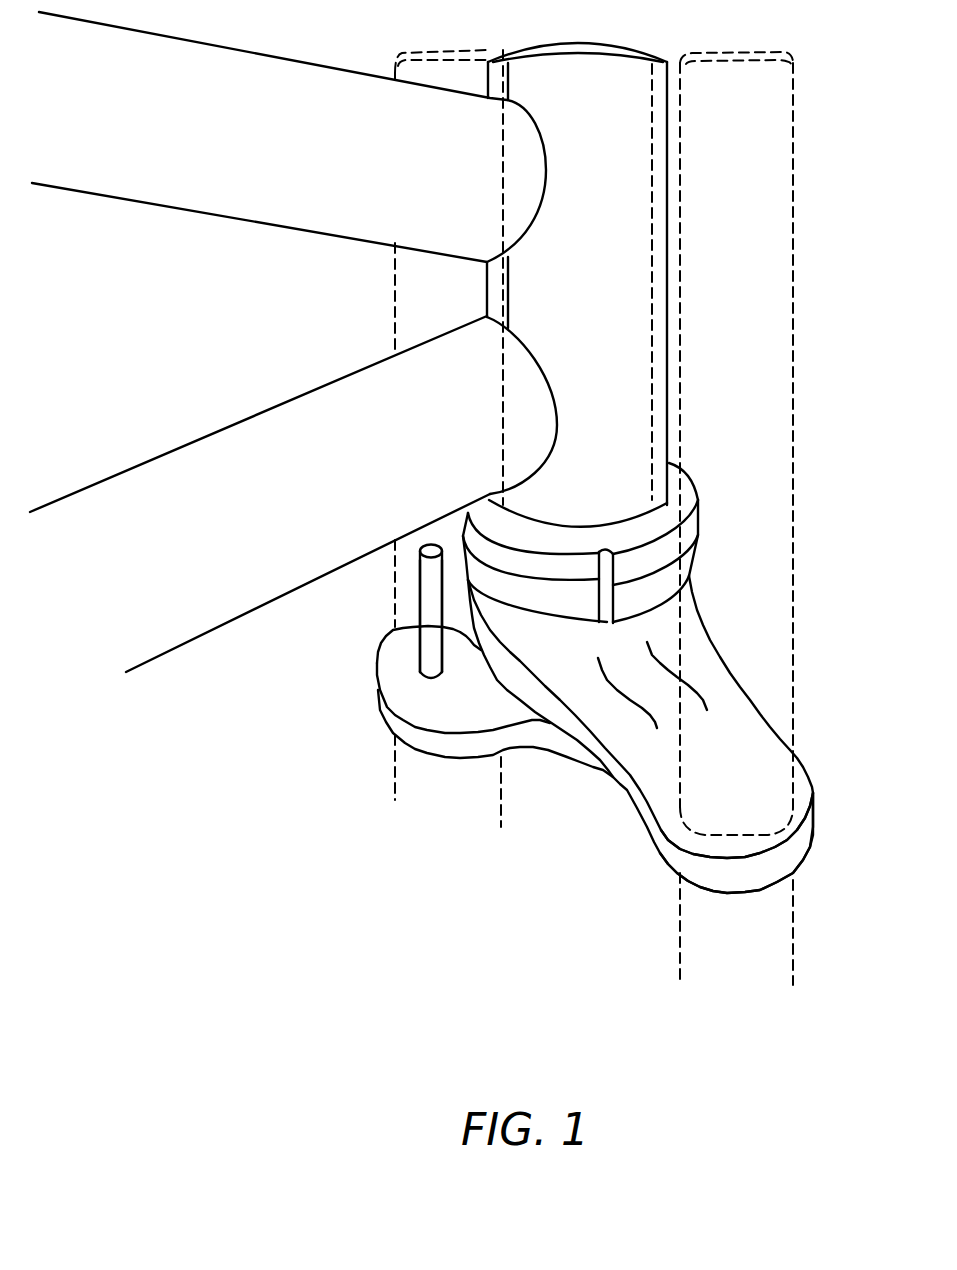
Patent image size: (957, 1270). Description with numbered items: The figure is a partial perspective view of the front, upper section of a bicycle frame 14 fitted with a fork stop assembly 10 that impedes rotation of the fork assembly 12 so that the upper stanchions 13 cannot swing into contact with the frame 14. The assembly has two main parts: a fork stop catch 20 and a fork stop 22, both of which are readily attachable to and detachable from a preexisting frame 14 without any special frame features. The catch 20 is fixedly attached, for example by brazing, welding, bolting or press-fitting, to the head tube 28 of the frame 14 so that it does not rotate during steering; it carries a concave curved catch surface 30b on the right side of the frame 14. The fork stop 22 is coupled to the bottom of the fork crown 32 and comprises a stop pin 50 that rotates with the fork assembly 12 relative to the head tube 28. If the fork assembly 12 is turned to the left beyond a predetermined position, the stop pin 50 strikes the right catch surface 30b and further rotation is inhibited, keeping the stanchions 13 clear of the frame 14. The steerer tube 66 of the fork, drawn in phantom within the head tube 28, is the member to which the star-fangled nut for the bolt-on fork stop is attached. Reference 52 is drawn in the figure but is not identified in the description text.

The fork stop assembly 10 is at (343, 717).
The fork assembly 12 is at (650, 869).
The upper stanchions 13 is at (765, 240).
The frame 14 is at (171, 472).
The fork stop catch 20 is at (623, 533).
The fork stop 22 is at (410, 595).
The head tube 28 is at (600, 284).
The right catch surface 30b is at (593, 553).
The fork crown 32 is at (572, 667).
The stop pin 50 is at (425, 610).
The collar top flange 52 is at (503, 500).
The steerer tube 66 is at (652, 148).